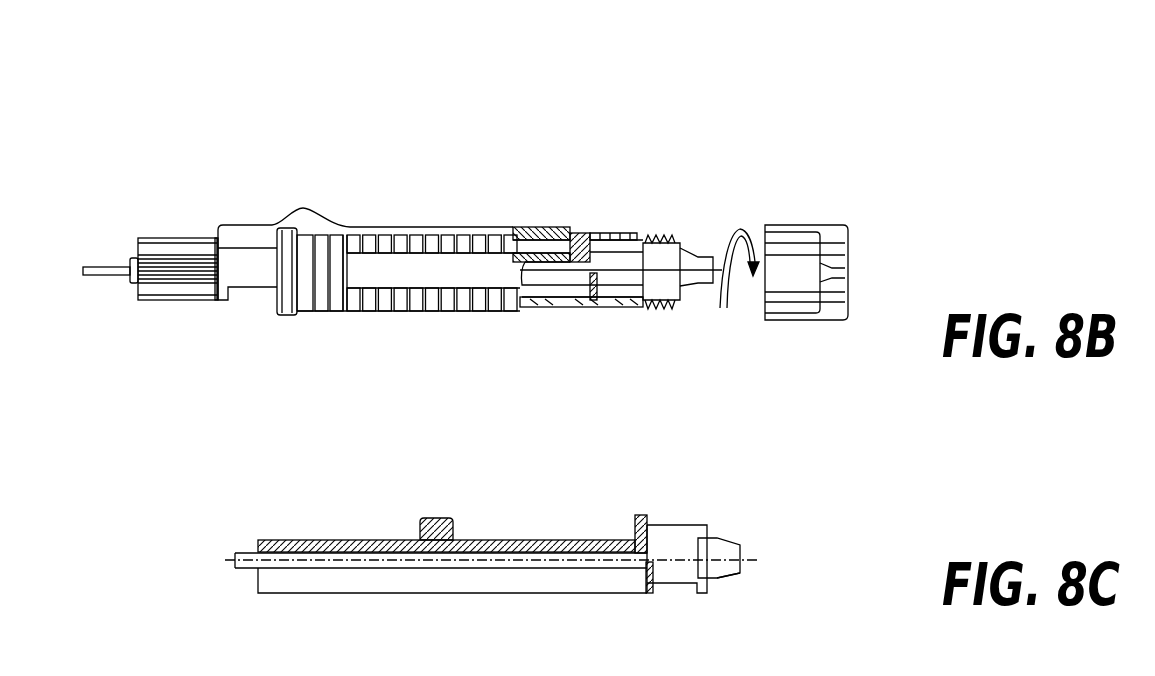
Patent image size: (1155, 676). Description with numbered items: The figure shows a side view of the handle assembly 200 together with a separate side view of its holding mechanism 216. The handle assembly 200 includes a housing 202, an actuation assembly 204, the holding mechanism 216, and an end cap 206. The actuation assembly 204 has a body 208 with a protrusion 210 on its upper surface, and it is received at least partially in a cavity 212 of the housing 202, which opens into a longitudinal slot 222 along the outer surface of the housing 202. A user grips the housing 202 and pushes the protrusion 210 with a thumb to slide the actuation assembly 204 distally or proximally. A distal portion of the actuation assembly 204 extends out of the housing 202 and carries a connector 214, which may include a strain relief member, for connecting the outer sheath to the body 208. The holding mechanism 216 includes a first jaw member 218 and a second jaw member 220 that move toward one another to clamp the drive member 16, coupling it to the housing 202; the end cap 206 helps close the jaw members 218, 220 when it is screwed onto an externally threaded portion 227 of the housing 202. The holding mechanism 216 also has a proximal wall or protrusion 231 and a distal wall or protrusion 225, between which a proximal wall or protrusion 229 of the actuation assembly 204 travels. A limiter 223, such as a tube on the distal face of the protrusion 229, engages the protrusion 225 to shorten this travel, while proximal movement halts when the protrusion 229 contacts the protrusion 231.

In FIG. 8B, the handle assembly 200 is at (234, 118).
In FIG. 8B, the connector 214 is at (162, 238).
In FIG. 8B, the protrusion 210 is at (310, 207).
In FIG. 8B, the housing 202 is at (338, 312).
In FIG. 8B, the actuation assembly 204 is at (385, 208).
In FIG. 8B, the body 208 is at (440, 227).
In FIG. 8B, the limiter 223 is at (530, 243).
In FIG. 8B, the proximal wall or protrusion 229 is at (557, 245).
In FIG. 8B, the longitudinal slot 222 is at (582, 236).
In FIG. 8B, the cavity 212 is at (592, 238).
In FIG. 8B, the holding mechanism 216 is at (692, 305).
In FIG. 8C, the holding mechanism 216 is at (397, 508).
In FIG. 8B, the drive member 16 is at (572, 272).
In FIG. 8B, the proximal wall or protrusion 231 is at (599, 282).
In FIG. 8C, the proximal wall or protrusion 231 is at (638, 513).
In FIG. 8B, the externally threaded portion 227 is at (668, 233).
In FIG. 8B, the first jaw member 218 is at (688, 245).
In FIG. 8C, the first jaw member 218 is at (728, 548).
In FIG. 8B, the second jaw member 220 is at (693, 281).
In FIG. 8C, the second jaw member 220 is at (727, 573).
In FIG. 8B, the end cap 206 is at (835, 225).
In FIG. 8C, the distal wall or protrusion 225 is at (438, 518).